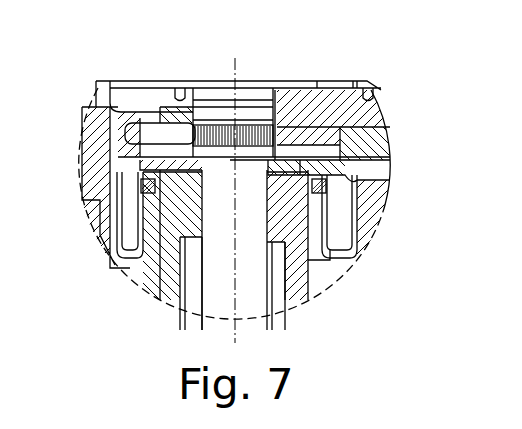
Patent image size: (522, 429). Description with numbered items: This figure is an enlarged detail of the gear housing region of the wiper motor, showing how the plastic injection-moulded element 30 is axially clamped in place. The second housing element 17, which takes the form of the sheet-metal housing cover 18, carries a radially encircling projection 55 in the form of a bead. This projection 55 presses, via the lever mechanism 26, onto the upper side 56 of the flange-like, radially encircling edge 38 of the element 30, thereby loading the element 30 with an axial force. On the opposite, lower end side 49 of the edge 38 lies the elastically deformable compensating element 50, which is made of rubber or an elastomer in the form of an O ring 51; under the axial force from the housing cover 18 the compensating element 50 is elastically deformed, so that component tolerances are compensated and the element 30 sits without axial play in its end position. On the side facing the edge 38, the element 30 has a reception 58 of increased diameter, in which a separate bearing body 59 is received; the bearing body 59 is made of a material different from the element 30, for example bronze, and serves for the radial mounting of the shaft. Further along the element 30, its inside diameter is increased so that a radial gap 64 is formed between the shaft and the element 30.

The second housing element 17 is at (236, 109).
The housing cover 18 is at (248, 88).
The lever mechanism 26 is at (373, 113).
The element 30 is at (297, 288).
The edge 38 is at (372, 188).
The end side 49 is at (137, 172).
The compensating element 50 is at (389, 217).
The O ring 51 is at (360, 212).
The projection 55 is at (176, 88).
The upper side 56 is at (330, 153).
The reception 58 is at (175, 188).
The bearing body 59 is at (300, 210).
The radial gap 64 is at (180, 318).